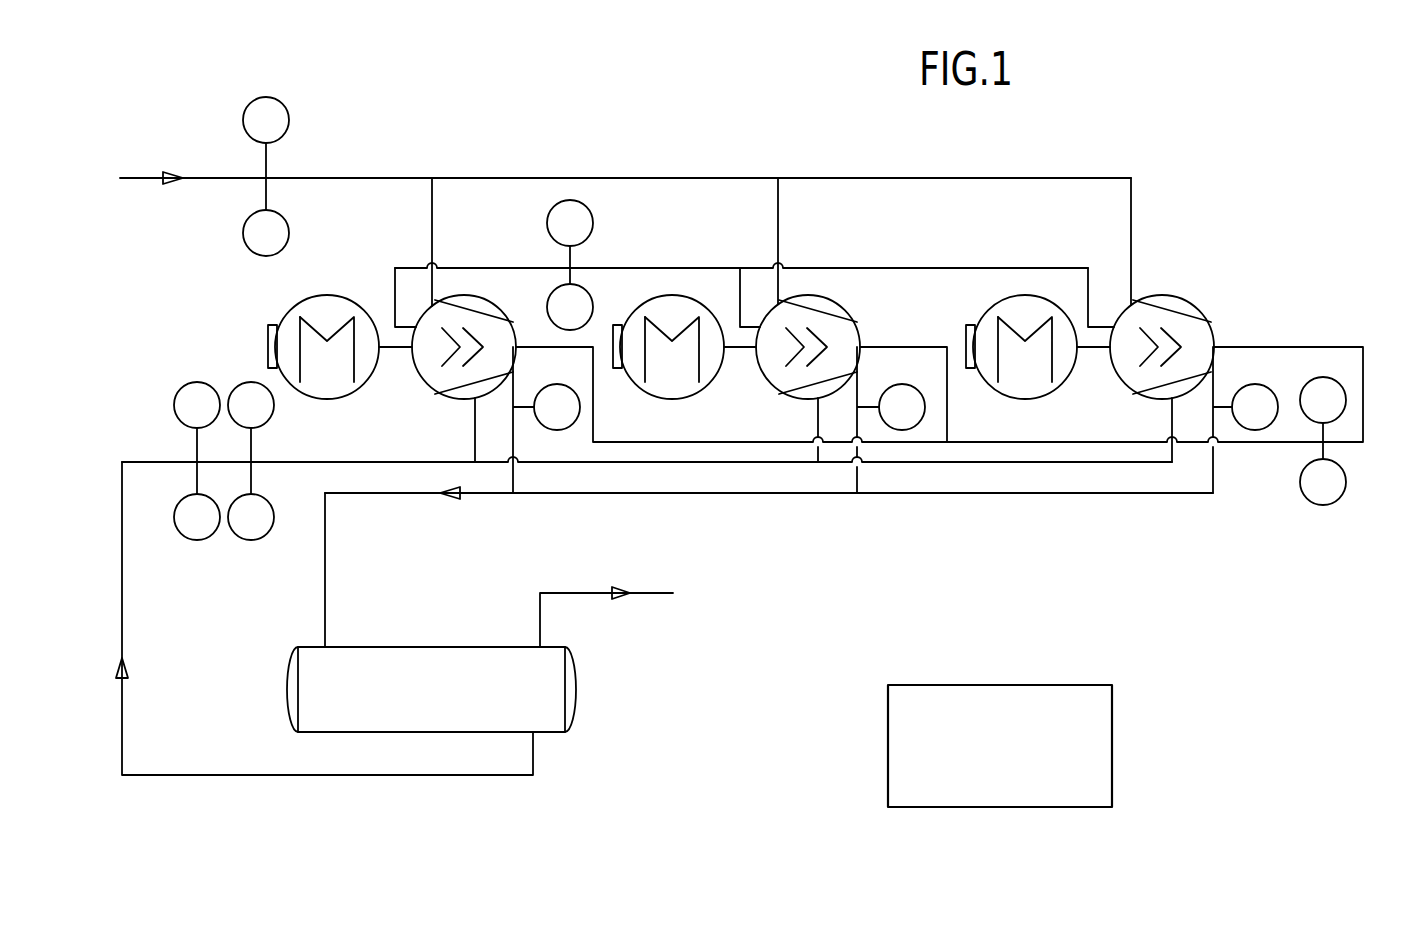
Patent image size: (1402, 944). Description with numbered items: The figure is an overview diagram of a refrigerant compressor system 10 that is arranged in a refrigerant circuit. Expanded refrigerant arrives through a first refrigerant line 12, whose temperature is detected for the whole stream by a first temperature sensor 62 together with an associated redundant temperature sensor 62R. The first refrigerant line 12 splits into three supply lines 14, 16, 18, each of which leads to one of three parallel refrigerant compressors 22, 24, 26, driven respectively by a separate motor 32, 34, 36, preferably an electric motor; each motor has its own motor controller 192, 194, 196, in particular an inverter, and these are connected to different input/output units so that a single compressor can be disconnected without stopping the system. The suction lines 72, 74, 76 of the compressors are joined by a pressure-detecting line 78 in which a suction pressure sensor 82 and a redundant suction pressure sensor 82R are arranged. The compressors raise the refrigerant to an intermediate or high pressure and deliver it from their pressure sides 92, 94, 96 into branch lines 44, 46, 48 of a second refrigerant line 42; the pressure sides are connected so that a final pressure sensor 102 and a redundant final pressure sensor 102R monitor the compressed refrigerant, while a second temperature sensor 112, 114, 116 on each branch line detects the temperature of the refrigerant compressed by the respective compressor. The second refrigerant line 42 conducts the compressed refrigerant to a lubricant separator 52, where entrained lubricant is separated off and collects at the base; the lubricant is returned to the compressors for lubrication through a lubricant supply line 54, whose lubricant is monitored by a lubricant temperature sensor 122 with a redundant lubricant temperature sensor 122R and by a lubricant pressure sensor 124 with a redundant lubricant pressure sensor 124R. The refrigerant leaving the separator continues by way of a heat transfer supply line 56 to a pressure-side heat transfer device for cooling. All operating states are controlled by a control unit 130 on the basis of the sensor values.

The refrigerant compressor system 10 is at (1202, 203).
The first refrigerant line 12 is at (707, 162).
The supply line 14 is at (433, 206).
The supply line 16 is at (778, 202).
The supply line 18 is at (1131, 200).
The refrigerant compressor 22 is at (472, 302).
The refrigerant compressor 24 is at (845, 310).
The refrigerant compressor 26 is at (1195, 310).
The motor 32 is at (337, 300).
The motor 34 is at (712, 300).
The motor 36 is at (1060, 318).
The second refrigerant line 42 is at (778, 507).
The branch line 44 is at (513, 392).
The branch line 46 is at (858, 383).
The branch line 48 is at (1215, 383).
The lubricant separator 52 is at (382, 630).
The lubricant supply line 54 is at (427, 777).
The heat transfer supply line 56 is at (655, 597).
The first temperature sensor 62 is at (266, 97).
The redundant temperature sensor 62R is at (243, 233).
The suction line 72 is at (418, 312).
The suction line 74 is at (765, 305).
The suction line 76 is at (1118, 310).
The pressure-detecting line 78 is at (665, 268).
The suction pressure sensor 82 is at (571, 200).
The redundant suction pressure sensor 82R is at (583, 290).
The pressure side 92 is at (538, 345).
The pressure side 94 is at (861, 345).
The pressure side 96 is at (1215, 348).
The final pressure sensor 102 is at (1322, 378).
The redundant final pressure sensor 102R is at (1330, 505).
The second temperature sensor 112 is at (560, 430).
The second temperature sensor 114 is at (903, 430).
The second temperature sensor 116 is at (1258, 430).
The lubricant temperature sensor 122 is at (183, 388).
The redundant lubricant temperature sensor 122R is at (198, 540).
The lubricant pressure sensor 124 is at (273, 408).
The redundant lubricant pressure sensor 124R is at (261, 536).
The control unit 130 is at (978, 757).
The motor controller 192 is at (268, 330).
The motor controller 194 is at (615, 385).
The motor controller 196 is at (970, 330).